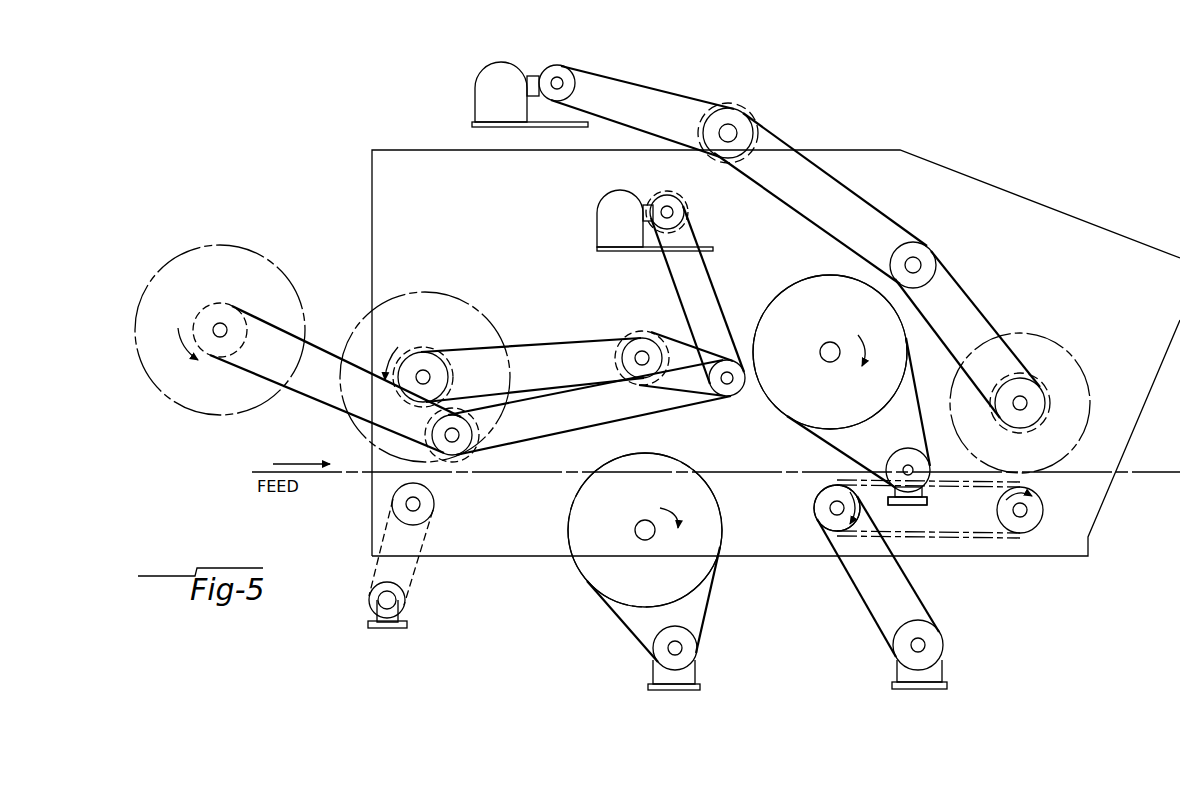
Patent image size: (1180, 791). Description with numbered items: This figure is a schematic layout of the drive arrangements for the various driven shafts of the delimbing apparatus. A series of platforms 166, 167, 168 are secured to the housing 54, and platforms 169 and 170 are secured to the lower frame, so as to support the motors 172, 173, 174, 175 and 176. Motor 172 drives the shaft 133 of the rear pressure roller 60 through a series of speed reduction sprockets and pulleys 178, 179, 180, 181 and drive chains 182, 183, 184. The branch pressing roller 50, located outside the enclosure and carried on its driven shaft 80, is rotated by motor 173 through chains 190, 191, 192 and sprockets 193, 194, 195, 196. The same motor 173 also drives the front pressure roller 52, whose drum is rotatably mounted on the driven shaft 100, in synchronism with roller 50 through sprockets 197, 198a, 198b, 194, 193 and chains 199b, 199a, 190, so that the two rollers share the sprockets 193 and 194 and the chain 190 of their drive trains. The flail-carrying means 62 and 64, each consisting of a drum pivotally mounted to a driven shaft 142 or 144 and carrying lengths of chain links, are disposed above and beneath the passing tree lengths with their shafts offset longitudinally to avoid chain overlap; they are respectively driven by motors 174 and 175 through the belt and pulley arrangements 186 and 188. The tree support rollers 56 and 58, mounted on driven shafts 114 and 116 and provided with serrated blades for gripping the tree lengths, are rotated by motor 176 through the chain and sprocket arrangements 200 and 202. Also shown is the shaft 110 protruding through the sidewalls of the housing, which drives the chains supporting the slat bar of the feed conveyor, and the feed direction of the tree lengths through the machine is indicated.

The branch pressing roller 50 is at (184, 253).
The sprocket 196 is at (224, 304).
The driven shaft 80 is at (226, 325).
The chain 192 is at (312, 411).
The front pressure roller 52 is at (396, 293).
The driven shaft 100 is at (430, 377).
The sprocket 197 is at (424, 350).
The sprocket 195 is at (468, 452).
The chain 199b is at (566, 346).
The sprocket 198a is at (638, 332).
The sprocket 198b is at (638, 360).
The sprocket 194 is at (738, 360).
The chain 199a is at (680, 392).
The chain 191 is at (600, 436).
The chain 190 is at (730, 282).
The sprocket 193 is at (686, 212).
The motor 173 is at (598, 222).
The platform 167 is at (713, 250).
The motor 172 is at (475, 97).
The platform 166 is at (548, 128).
The speed reduction sprocket 178 is at (566, 50).
The drive chain 182 is at (686, 94).
The speed reduction sprocket 179 is at (753, 118).
The housing 54 is at (874, 149).
The drive chain 183 is at (900, 226).
The speed reduction sprocket 180 is at (937, 260).
The drive chain 184 is at (985, 318).
The rear pressure roller 60 is at (1046, 340).
The speed reduction sprocket 181 is at (1045, 406).
The shaft 133 is at (1027, 402).
The driven shaft 142 is at (832, 342).
The flail-carrying means 62 is at (790, 290).
The belt and pulley arrangement 186 is at (813, 427).
The chain and sprocket arrangement 202 is at (964, 490).
The motor 174 is at (925, 496).
The platform 168 is at (905, 506).
The driven shaft 114 is at (824, 502).
The tree support roller 56 is at (813, 508).
The tree support roller 58 is at (1047, 488).
The driven shaft 116 is at (1031, 511).
The chain and sprocket arrangement 200 is at (868, 617).
The motor 176 is at (897, 669).
The platform 170 is at (955, 690).
The driven shaft 144 is at (636, 528).
The flail-carrying means 64 is at (570, 563).
The belt and pulley arrangement 188 is at (613, 621).
The motor 175 is at (697, 671).
The platform 169 is at (642, 686).
The shaft 110 is at (418, 508).